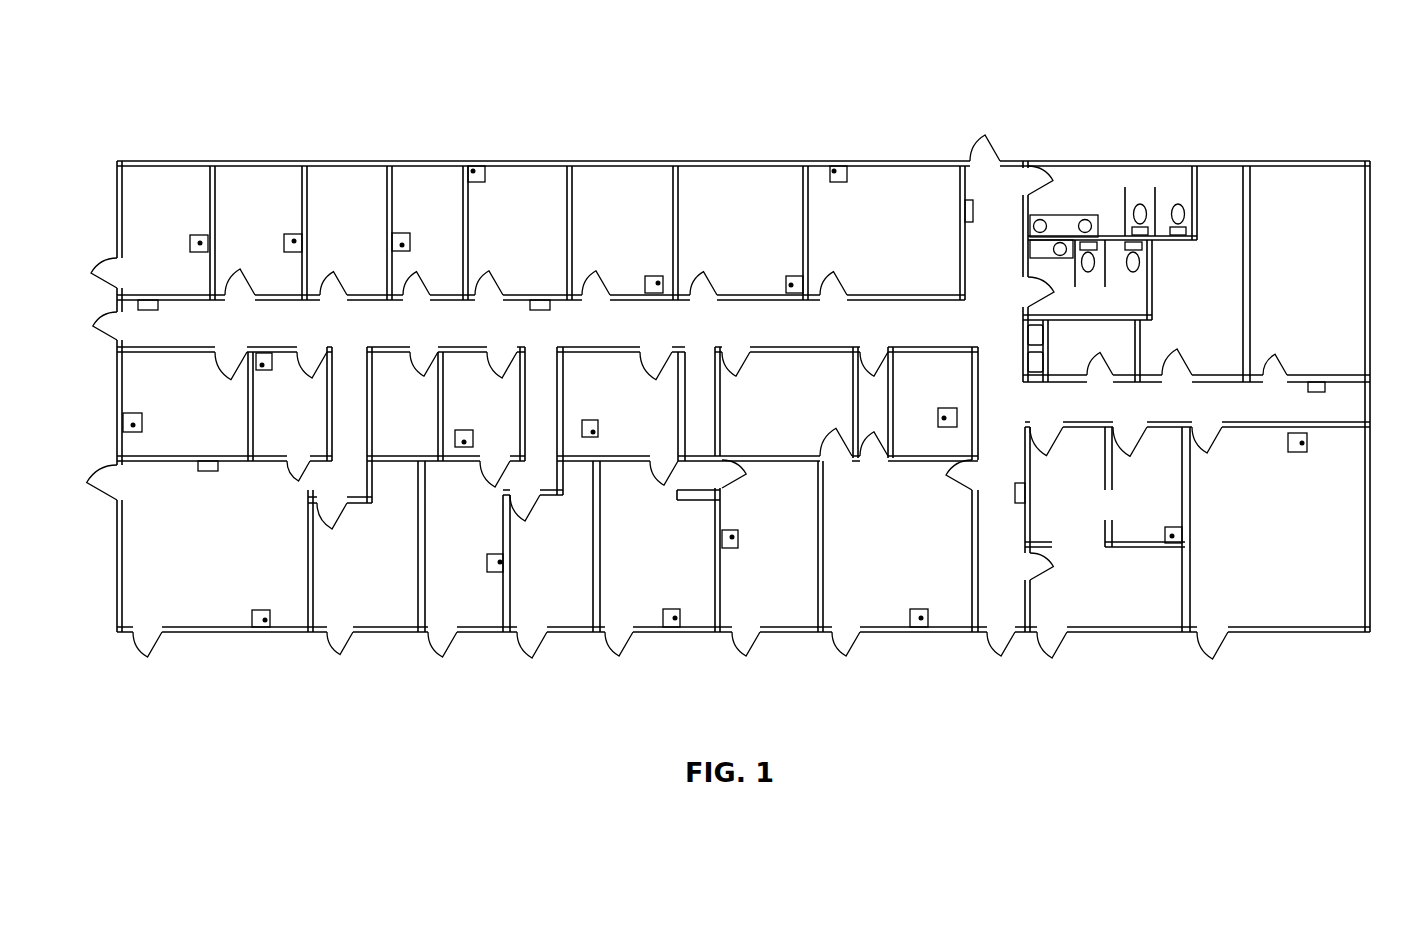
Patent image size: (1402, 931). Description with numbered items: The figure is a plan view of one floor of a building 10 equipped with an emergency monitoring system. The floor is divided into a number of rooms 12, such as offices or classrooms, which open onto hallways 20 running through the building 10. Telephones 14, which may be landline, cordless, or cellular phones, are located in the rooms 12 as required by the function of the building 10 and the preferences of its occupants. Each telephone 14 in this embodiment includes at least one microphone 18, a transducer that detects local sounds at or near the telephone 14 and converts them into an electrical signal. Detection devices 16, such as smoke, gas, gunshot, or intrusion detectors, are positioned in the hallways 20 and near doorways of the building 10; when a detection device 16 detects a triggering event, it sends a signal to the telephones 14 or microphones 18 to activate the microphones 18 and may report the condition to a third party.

The building 10 is at (194, 79).
The room 12 is at (907, 181).
The telephone 14 is at (188, 242).
The detection device 16 is at (148, 300).
The microphone 18 is at (200, 240).
The hallway 20 is at (697, 320).